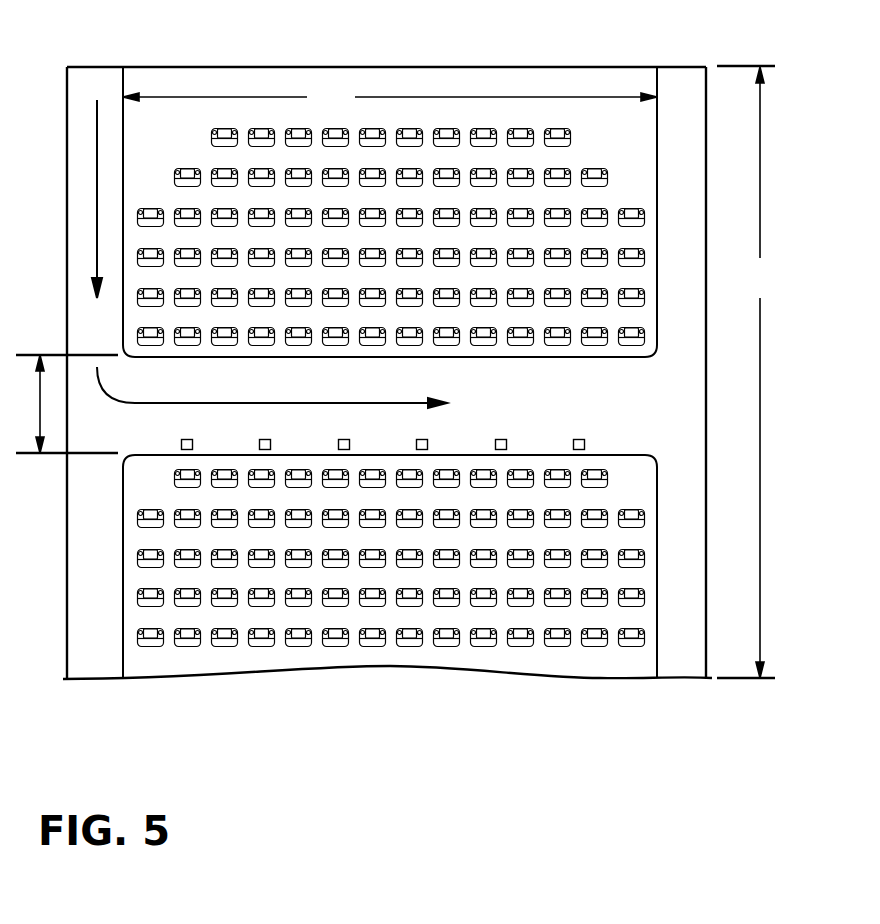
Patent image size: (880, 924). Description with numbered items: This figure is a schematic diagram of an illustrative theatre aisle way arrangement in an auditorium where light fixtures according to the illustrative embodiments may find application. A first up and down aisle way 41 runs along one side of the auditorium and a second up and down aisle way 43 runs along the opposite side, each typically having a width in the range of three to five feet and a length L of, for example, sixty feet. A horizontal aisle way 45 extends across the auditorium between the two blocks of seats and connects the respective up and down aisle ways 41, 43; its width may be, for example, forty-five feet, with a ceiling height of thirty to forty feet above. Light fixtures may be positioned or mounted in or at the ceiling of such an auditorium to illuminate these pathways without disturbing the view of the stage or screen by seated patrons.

The first up and down aisle way 41 is at (683, 132).
The second up and down aisle way 43 is at (85, 207).
The horizontal aisle way 45 is at (522, 407).